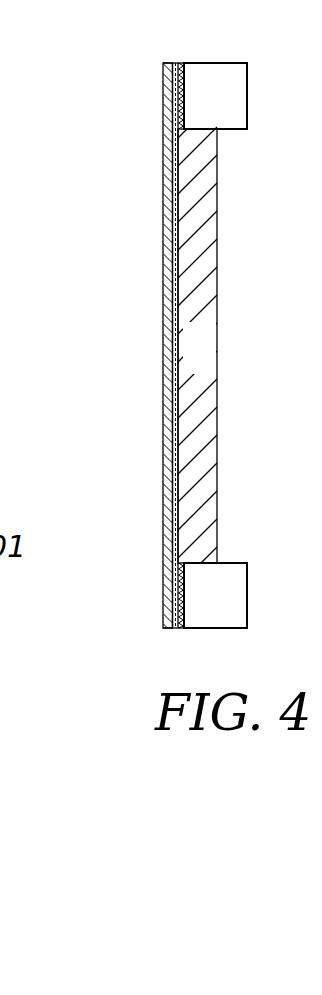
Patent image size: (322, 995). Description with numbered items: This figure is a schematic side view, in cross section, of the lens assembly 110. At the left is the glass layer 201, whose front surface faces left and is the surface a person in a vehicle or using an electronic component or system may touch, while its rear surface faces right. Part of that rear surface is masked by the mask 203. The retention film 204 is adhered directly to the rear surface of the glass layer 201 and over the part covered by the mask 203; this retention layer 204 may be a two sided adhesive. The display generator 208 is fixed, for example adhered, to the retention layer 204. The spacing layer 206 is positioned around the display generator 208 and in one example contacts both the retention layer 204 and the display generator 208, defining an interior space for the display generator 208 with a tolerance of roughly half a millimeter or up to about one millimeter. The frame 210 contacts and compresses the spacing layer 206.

The lens assembly 110 is at (116, 348).
The glass layer 201 is at (174, 108).
The mask 203 is at (166, 69).
The retention film 204 is at (176, 162).
The spacing layer 206 is at (181, 63).
The display generator 208 is at (211, 198).
The frame 210 is at (249, 95).